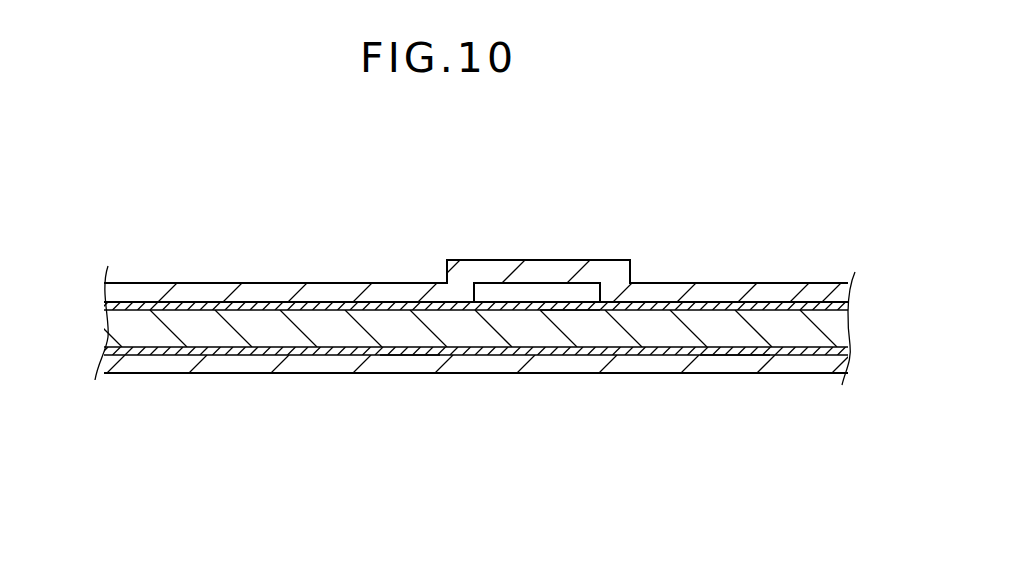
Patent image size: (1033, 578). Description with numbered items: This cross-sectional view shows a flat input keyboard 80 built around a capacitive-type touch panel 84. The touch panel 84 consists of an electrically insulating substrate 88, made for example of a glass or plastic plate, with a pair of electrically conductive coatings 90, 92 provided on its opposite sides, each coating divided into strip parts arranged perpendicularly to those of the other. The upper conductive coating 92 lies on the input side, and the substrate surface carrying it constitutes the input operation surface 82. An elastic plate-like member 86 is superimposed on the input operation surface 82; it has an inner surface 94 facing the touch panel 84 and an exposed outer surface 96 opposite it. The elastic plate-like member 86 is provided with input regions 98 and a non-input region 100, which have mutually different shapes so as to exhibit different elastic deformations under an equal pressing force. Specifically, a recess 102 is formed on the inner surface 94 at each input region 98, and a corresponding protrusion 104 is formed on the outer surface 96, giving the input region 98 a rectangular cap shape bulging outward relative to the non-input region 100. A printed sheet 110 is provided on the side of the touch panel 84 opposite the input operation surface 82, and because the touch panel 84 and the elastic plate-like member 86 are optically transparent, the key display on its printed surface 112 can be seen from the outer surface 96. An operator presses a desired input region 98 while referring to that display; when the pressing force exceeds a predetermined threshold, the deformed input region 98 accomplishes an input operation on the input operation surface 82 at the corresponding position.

The flat input keyboard 80 is at (712, 215).
The input operation surface 82 is at (803, 284).
The capacitive-type touch panel 84 is at (735, 356).
The elastic plate-like member 86 is at (755, 283).
The electrically insulating substrate 88 is at (472, 333).
The conductive coating 90 is at (408, 352).
The conductive coating 92 is at (568, 307).
The inner surface 94 is at (135, 303).
The outer surface 96 is at (212, 283).
The input region 98 is at (548, 260).
The non-input region 100 is at (334, 283).
The recess 102 is at (552, 281).
The protrusion 104 is at (496, 260).
The printed sheet 110 is at (317, 373).
The printed surface 112 is at (163, 349).